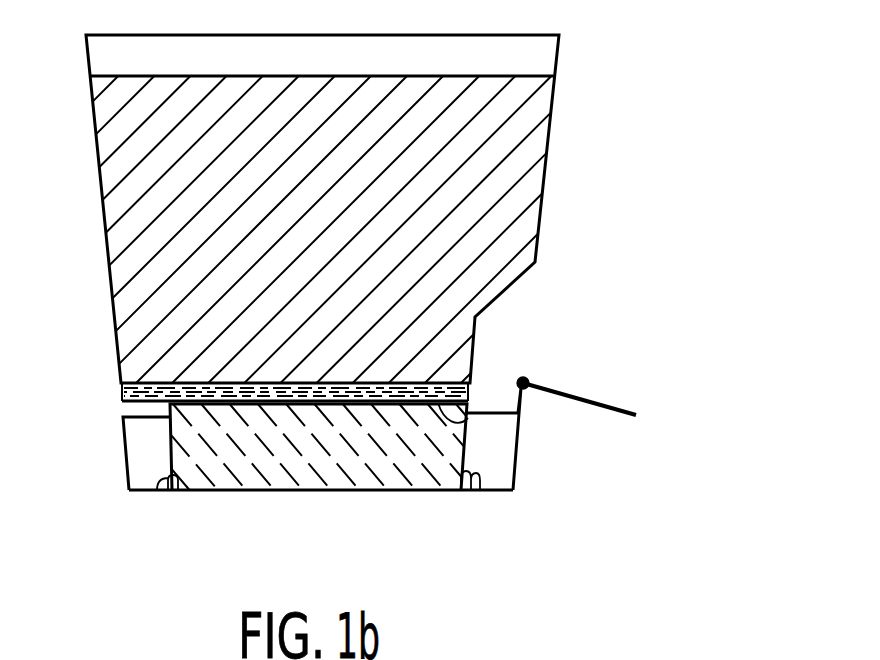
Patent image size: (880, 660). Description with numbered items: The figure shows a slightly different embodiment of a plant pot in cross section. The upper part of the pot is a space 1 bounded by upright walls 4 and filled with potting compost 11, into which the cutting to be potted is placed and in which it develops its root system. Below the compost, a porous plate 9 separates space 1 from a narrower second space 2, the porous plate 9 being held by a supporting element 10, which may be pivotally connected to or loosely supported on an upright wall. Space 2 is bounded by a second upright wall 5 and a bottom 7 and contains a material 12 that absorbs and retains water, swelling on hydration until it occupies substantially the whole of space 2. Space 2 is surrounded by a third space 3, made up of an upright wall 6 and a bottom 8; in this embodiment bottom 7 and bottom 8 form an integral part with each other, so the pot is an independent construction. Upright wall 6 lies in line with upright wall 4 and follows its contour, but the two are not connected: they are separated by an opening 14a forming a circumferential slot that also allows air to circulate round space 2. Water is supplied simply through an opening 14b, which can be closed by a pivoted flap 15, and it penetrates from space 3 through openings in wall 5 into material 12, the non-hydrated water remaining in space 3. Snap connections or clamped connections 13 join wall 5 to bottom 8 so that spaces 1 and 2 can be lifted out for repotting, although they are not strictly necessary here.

The space 1 is at (190, 128).
The upright wall 4 is at (98, 182).
The potting compost 11 is at (203, 280).
The porous plate 9 is at (120, 392).
The opening 14a is at (121, 409).
The opening 14b is at (525, 325).
The second upright wall 5 is at (170, 440).
The upright wall 6 is at (127, 468).
The second space 2 is at (290, 458).
The material 12 is at (243, 459).
The bottom 7 is at (360, 490).
The snap connections or clamped connections 13 is at (157, 490).
The third space 3 is at (491, 446).
The bottom 8 is at (496, 490).
The supporting element 10 is at (483, 412).
The pivoted flap 15 is at (623, 420).